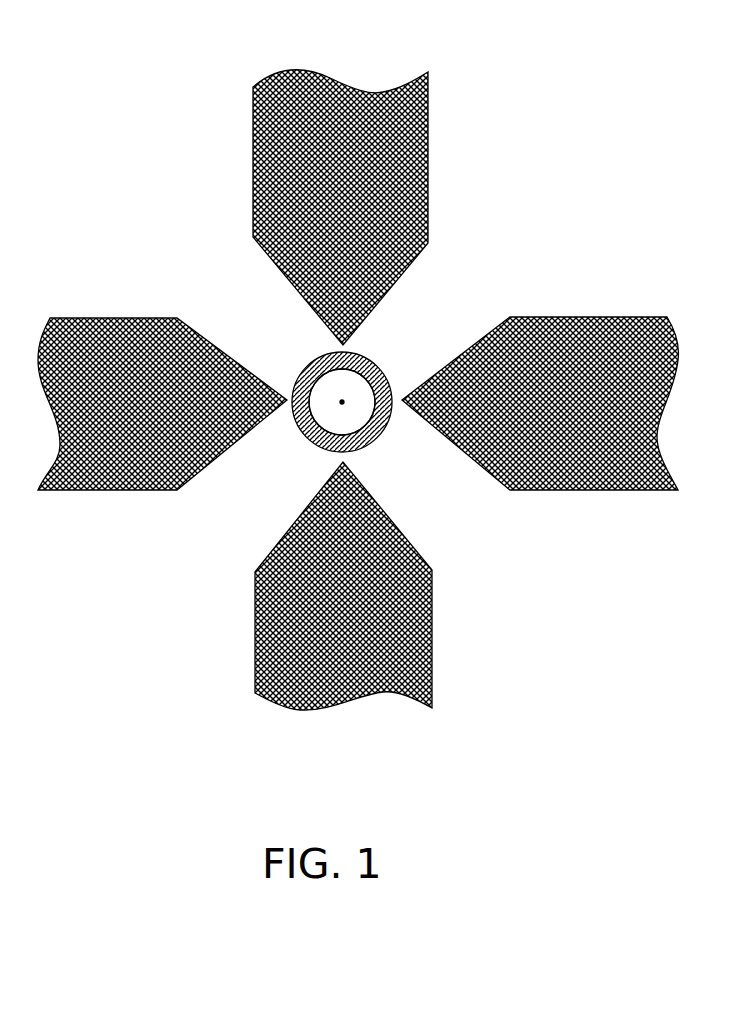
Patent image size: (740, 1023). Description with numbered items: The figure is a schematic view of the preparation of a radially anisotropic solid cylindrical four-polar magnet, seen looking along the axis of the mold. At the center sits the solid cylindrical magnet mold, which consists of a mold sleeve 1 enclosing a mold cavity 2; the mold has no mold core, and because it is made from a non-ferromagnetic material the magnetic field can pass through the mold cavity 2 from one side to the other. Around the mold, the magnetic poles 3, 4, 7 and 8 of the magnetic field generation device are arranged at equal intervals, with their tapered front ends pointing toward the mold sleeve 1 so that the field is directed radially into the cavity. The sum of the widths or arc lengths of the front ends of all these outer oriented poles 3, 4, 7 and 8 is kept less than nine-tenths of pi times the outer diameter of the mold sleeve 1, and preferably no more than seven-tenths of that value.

The mold sleeve 1 is at (327, 355).
The mold cavity 2 is at (342, 402).
The magnetic pole 3 is at (570, 317).
The magnetic pole 4 is at (112, 318).
The magnetic pole 7 is at (342, 82).
The magnetic pole 8 is at (328, 702).